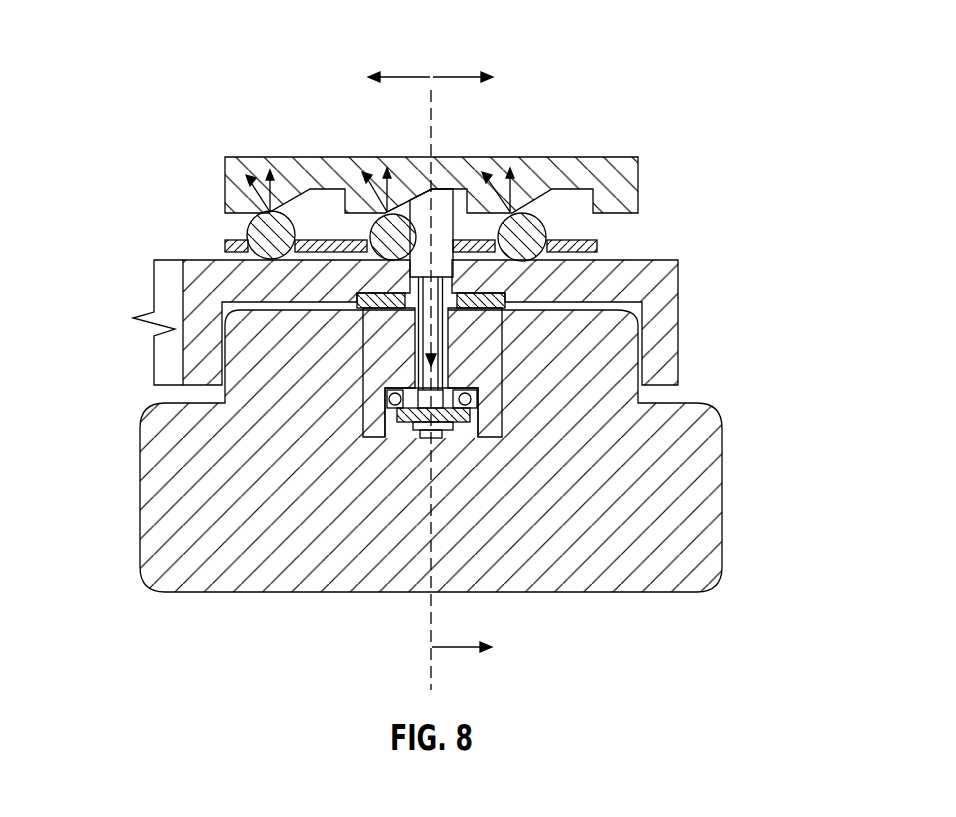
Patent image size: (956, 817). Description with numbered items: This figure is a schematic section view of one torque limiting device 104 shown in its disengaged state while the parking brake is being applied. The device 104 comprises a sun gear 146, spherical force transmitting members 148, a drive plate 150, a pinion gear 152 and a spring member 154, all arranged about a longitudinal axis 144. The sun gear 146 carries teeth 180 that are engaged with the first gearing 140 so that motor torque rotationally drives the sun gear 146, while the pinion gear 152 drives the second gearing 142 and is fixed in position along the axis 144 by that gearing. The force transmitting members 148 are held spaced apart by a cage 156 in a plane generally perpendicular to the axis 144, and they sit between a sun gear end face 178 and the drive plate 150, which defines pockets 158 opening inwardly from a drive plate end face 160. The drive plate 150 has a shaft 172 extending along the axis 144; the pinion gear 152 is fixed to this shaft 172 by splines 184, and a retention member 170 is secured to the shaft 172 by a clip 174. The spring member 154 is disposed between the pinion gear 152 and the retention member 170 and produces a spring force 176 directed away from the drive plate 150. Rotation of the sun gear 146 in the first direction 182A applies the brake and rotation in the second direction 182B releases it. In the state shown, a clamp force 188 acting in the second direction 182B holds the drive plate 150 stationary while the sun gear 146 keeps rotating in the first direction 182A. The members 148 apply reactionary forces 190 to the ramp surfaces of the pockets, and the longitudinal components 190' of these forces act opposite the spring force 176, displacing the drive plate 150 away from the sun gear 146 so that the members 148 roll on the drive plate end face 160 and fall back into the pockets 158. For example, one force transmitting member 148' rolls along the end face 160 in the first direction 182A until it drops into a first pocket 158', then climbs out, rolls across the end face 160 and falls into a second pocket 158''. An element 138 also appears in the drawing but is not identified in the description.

The torque limiting device 104 is at (730, 218).
The base assembly 138 is at (147, 399).
The first gearing 140 is at (148, 353).
The second gearing 142 is at (723, 545).
The longitudinal axis 144 is at (430, 687).
The sun gear 146 is at (668, 372).
The force transmitting members 148 is at (445, 192).
The force transmitting member 148' is at (552, 184).
The drive plate 150 is at (640, 186).
The pinion gear 152 is at (505, 428).
The spring member 154 is at (393, 410).
The cage 156 is at (222, 246).
The pockets 158 is at (574, 152).
The first pocket 158' is at (456, 152).
The second pocket 158'' is at (286, 157).
The drive plate end face 160 is at (237, 205).
The retention member 170 is at (452, 422).
The shaft 172 is at (447, 368).
The clip 174 is at (430, 438).
The spring force 176 is at (430, 335).
The sun gear end face 178 is at (651, 259).
The teeth 180 is at (678, 318).
The first direction 182A is at (397, 72).
The second direction 182B is at (462, 72).
The splines 184 is at (420, 350).
The clamp force 188 is at (467, 652).
The reactionary forces 190 is at (356, 227).
The longitudinal components 190' is at (334, 182).